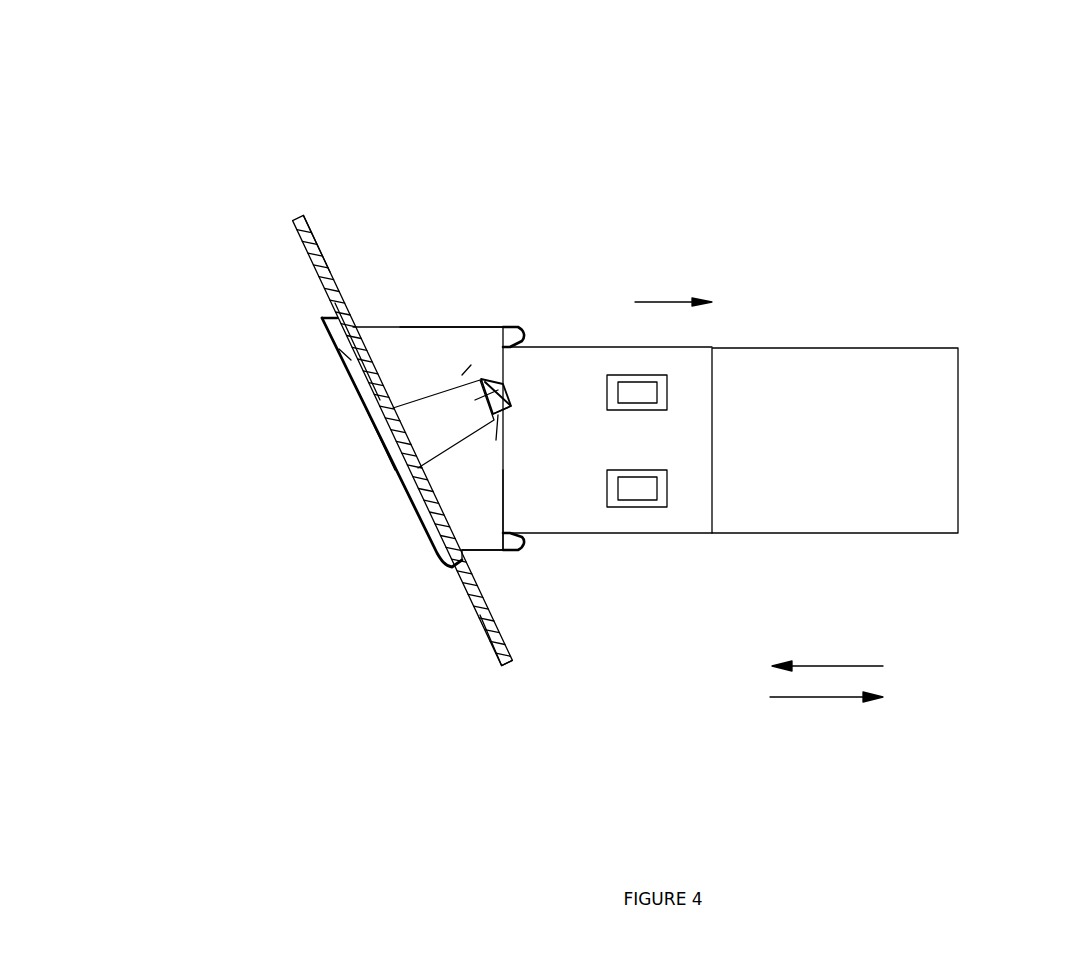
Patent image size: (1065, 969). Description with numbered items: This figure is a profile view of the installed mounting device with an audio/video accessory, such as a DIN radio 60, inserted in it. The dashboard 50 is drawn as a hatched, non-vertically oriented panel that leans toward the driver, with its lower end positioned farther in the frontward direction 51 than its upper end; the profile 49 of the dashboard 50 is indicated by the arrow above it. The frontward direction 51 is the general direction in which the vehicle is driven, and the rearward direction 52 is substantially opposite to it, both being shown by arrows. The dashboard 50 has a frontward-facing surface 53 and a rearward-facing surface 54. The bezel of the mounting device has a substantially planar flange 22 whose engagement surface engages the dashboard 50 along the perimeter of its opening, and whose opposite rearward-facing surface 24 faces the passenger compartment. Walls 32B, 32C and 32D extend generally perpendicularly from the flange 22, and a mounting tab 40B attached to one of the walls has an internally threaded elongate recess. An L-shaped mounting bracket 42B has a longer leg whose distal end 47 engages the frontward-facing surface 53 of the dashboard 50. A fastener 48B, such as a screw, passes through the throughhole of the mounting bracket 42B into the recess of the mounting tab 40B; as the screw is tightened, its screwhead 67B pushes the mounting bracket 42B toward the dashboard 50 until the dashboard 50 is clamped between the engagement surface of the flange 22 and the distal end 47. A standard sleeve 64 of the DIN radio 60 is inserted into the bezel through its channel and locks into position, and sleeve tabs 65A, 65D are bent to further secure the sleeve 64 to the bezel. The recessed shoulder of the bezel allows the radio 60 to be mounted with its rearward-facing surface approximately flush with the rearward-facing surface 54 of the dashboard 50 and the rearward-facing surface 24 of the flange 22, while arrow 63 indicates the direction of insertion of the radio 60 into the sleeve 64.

The profile 49 is at (350, 182).
The dashboard 50 is at (300, 247).
The frontward-facing surface 53 is at (337, 287).
The rearward-facing surface 54 is at (492, 645).
The rearward-facing surface 24 is at (345, 377).
The flange 22 is at (327, 340).
The mounting tab 40B is at (437, 328).
The wall 32D is at (469, 327).
The wall 32C is at (472, 503).
The wall 32B is at (470, 560).
The distal end 47 is at (370, 423).
The mounting bracket 42B is at (428, 438).
The fastener 48B is at (507, 390).
The screwhead 67B is at (507, 398).
The sleeve tab 65A is at (513, 323).
The sleeve tab 65D is at (520, 550).
The sleeve 64 is at (706, 347).
The insertion direction arrow 63 is at (668, 302).
The DIN radio 60 is at (923, 348).
The rearward direction 52 is at (815, 666).
The frontward direction 51 is at (820, 697).